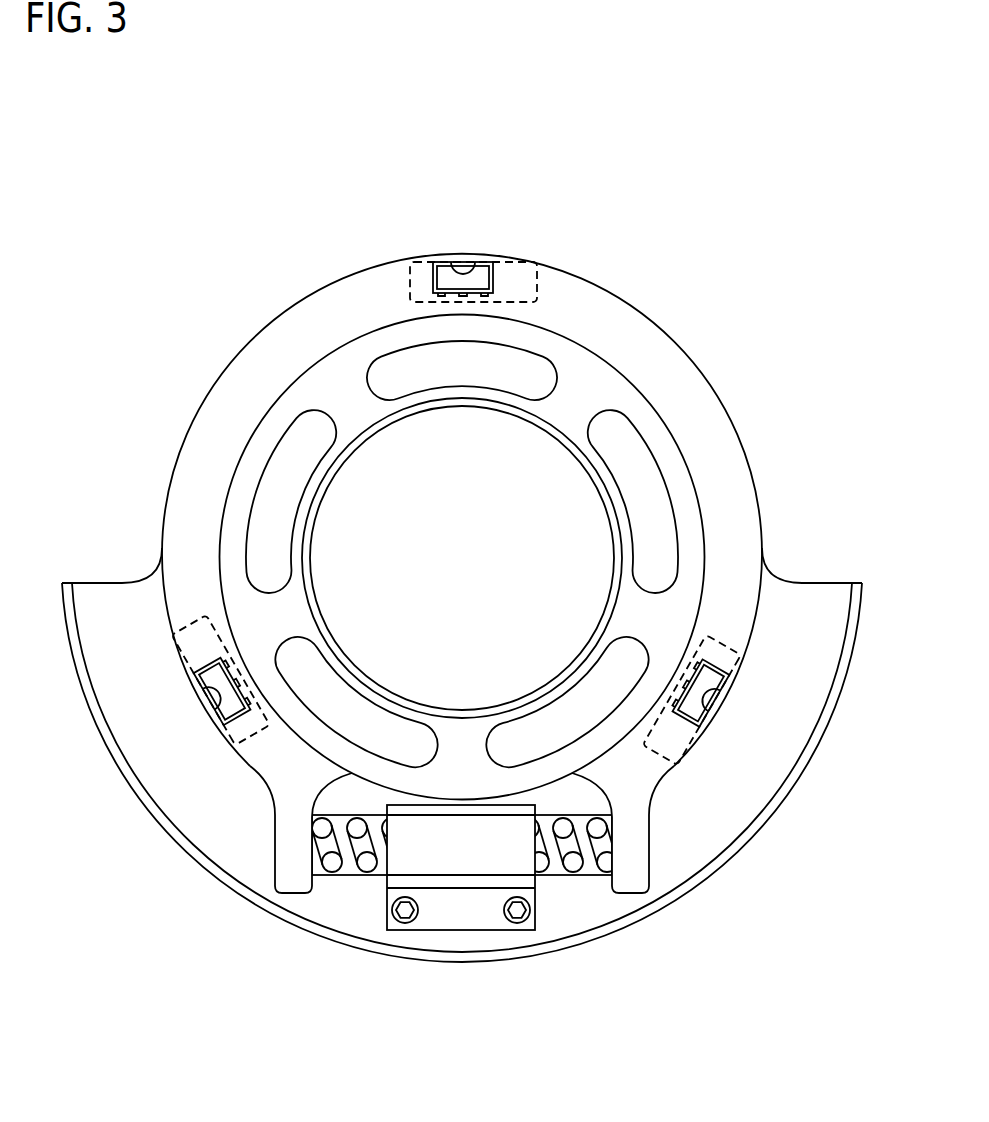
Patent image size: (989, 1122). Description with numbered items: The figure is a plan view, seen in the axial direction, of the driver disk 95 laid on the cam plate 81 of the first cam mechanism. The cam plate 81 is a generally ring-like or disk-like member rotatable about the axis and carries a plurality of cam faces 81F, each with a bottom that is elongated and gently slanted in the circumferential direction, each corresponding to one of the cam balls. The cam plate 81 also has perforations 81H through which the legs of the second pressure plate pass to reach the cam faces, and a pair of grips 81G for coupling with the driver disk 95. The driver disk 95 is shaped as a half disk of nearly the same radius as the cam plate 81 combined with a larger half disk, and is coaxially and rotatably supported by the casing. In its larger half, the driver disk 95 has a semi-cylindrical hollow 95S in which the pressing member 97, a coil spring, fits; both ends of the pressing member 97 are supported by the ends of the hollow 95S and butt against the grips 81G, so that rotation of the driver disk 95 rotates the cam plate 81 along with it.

The cam plate 81 is at (653, 320).
The cam face 81F is at (465, 372).
The grip 81G is at (262, 853).
The perforation 81H is at (470, 261).
The driver disk 95 is at (462, 963).
The hollow 95S is at (590, 860).
The pressing member 97 is at (368, 875).